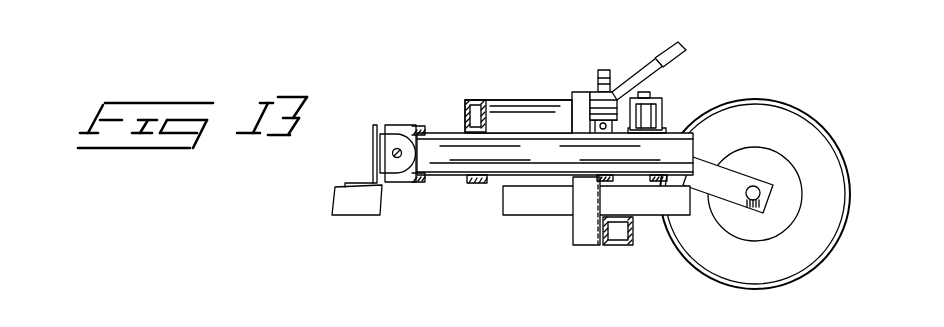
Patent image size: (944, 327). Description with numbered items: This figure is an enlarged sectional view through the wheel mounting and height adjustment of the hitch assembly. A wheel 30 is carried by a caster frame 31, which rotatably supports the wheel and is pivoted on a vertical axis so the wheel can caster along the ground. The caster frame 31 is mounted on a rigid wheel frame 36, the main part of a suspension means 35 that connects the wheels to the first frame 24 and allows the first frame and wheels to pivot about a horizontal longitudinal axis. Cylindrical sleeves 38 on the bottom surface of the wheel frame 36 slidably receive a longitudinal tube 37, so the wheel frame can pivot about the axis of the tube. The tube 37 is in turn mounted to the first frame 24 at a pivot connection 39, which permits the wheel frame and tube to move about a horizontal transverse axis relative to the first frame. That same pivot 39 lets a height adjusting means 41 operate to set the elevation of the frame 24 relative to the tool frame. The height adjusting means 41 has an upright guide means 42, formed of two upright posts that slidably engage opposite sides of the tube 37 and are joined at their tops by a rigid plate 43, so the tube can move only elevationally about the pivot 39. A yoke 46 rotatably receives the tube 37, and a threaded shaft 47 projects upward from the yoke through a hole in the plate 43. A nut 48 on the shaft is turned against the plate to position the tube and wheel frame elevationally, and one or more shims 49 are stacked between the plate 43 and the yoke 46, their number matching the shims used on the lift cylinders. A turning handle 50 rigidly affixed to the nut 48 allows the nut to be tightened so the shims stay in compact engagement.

The first frame 24 is at (363, 212).
The wheels 30 is at (766, 100).
The caster frames 31 is at (728, 175).
The suspension means 35 is at (480, 100).
The wheel frame 36 is at (530, 100).
The longitudinal tube 37 is at (500, 172).
The cylindrical sleeves 38 is at (466, 114).
The pivot connection 39 is at (394, 153).
The height adjusting means 41 is at (597, 68).
The upright guide means 42 is at (580, 118).
The rigid plate 43 is at (578, 94).
The yoke 46 is at (598, 140).
The shaft 47 is at (607, 69).
The nut 48 is at (619, 88).
The shims 49 is at (654, 98).
The turning handle 50 is at (684, 50).